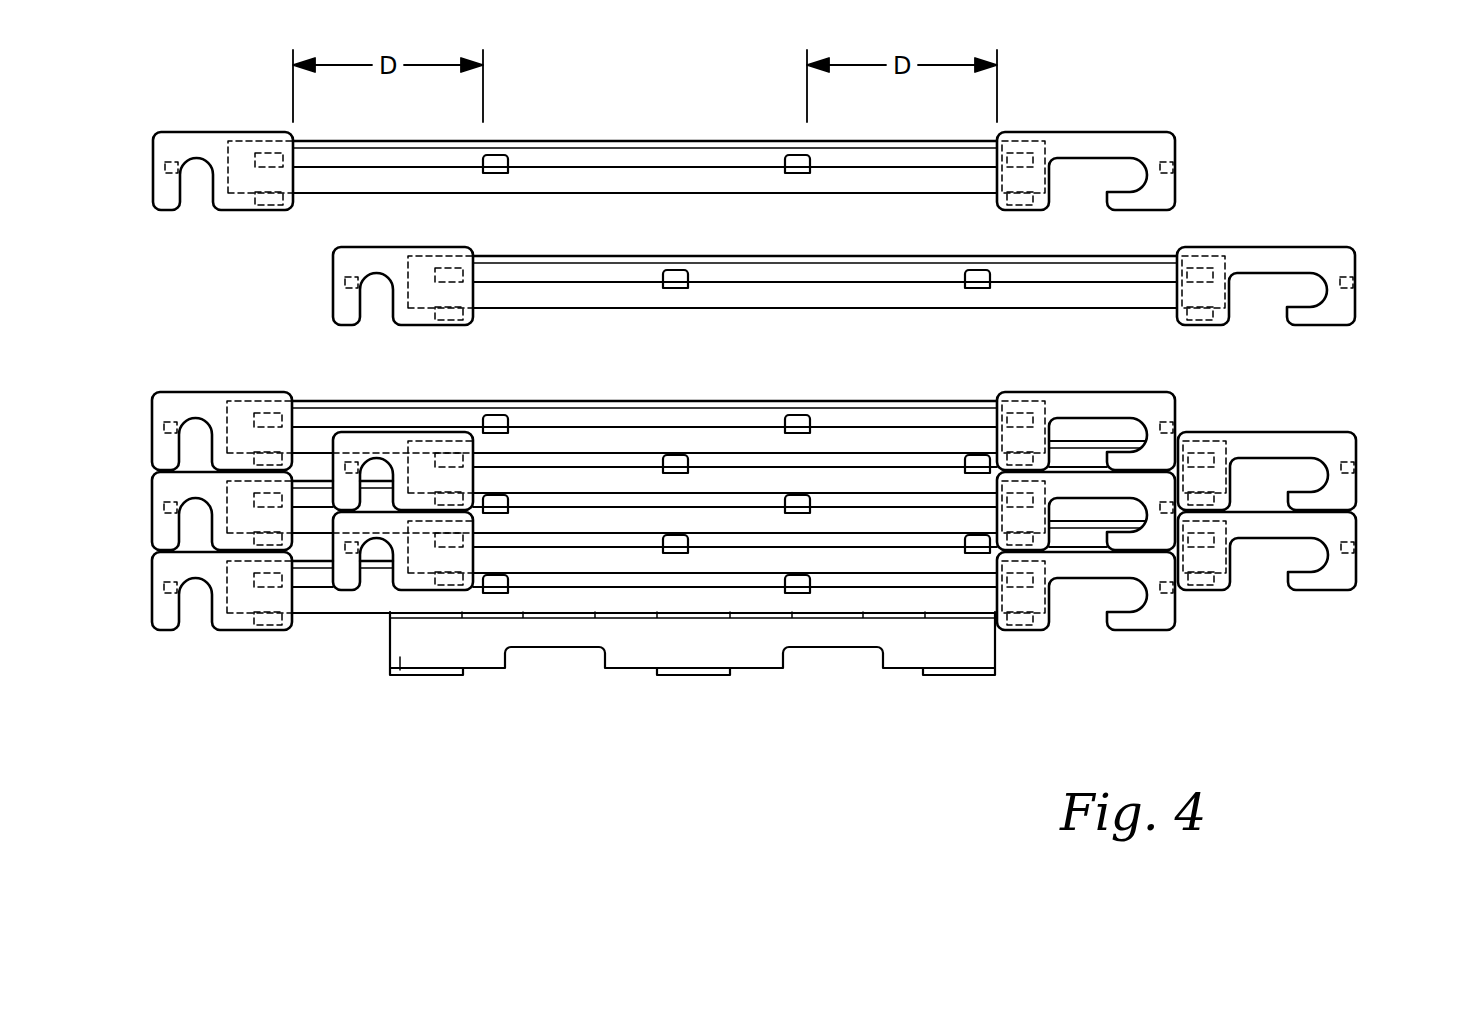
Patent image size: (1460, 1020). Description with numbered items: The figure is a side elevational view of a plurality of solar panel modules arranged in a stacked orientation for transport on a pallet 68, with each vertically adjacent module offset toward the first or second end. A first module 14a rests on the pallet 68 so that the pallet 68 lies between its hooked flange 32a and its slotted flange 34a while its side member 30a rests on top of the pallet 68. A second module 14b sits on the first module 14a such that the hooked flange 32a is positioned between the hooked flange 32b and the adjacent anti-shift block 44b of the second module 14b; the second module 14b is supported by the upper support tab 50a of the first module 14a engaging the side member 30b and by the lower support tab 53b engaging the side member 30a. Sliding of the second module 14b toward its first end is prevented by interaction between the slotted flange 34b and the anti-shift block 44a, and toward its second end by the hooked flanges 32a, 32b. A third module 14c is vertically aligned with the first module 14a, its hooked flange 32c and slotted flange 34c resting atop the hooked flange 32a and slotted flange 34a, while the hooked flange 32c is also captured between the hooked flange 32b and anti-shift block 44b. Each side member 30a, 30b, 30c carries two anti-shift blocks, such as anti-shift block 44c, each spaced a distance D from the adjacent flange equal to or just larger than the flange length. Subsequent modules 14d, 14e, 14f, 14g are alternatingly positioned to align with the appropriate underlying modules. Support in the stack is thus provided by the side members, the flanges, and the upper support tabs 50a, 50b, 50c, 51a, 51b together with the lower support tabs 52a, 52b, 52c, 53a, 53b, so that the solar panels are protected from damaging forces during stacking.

The first module 14a is at (681, 640).
The second module 14b is at (856, 541).
The third module 14c is at (767, 450).
The module 14d is at (1322, 432).
The module 14e is at (1105, 392).
The module 14f is at (1300, 247).
The module 14g is at (1175, 183).
The side member 30a is at (575, 600).
The side member 30b is at (636, 540).
The side member 30c is at (722, 498).
The hooked flange 32a is at (1086, 637).
The hooked flange 32b is at (1290, 598).
The hooked flange 32c is at (1089, 450).
The slotted flange 34a is at (209, 631).
The slotted flange 34b is at (381, 541).
The slotted flange 34c is at (150, 518).
The anti-shift block 44a is at (497, 597).
The anti-shift block 44b is at (973, 555).
The anti-shift block 44c is at (505, 497).
The upper support tab 50a is at (1055, 578).
The upper support tab 50b is at (1233, 540).
The upper support tab 50c is at (993, 500).
The upper support tab 51a is at (240, 625).
The upper support tab 51b is at (437, 535).
The lower support tab 52a is at (1013, 630).
The lower support tab 52b is at (1200, 587).
The lower support tab 52c is at (1077, 507).
The lower support tab 53a is at (293, 627).
The lower support tab 53b is at (450, 577).
The pallet 68 is at (395, 675).